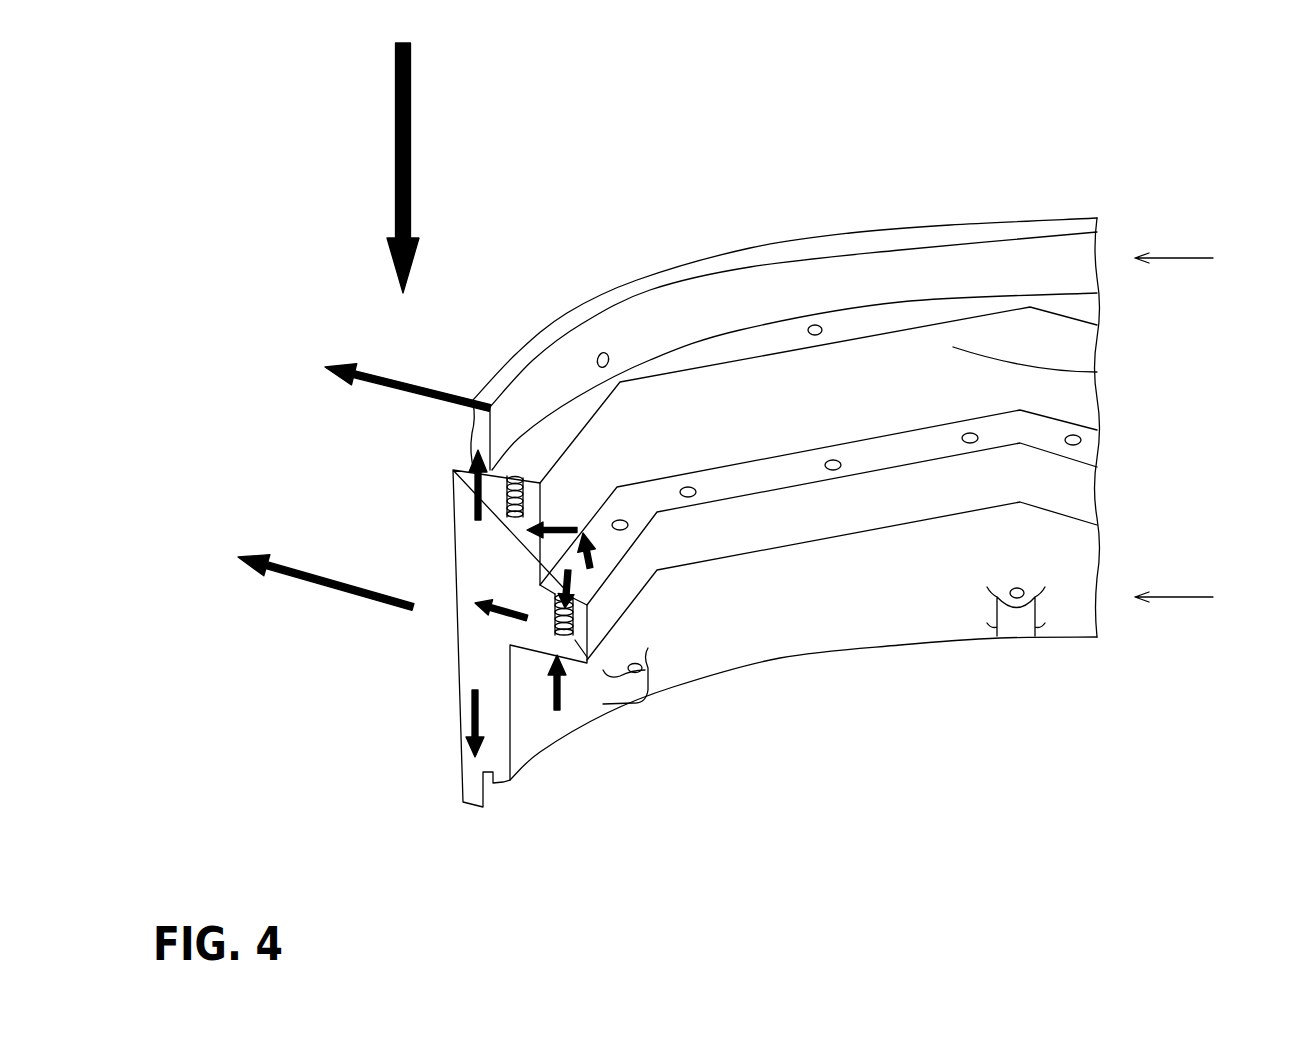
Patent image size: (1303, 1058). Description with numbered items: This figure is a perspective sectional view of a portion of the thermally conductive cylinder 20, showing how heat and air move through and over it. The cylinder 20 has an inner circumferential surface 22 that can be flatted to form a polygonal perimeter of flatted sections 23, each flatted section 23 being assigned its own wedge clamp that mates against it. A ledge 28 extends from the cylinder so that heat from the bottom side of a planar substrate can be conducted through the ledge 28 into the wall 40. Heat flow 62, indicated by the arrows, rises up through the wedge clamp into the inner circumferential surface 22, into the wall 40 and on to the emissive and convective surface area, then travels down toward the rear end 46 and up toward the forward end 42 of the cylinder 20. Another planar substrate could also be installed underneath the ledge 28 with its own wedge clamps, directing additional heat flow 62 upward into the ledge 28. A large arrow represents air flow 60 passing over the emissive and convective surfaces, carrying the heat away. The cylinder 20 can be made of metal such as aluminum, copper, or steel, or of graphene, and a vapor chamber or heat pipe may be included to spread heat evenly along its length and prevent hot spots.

The thermally conductive cylinder 20 is at (938, 130).
The inner circumferential surface 22 is at (1013, 267).
The flatted sections 23 is at (597, 462).
The ledge 28 is at (882, 322).
The wall 40 is at (562, 330).
The forward end 42 is at (1195, 255).
The rear end 46 is at (1195, 597).
The air flow 60 is at (395, 147).
The heat flow 62 is at (408, 390).